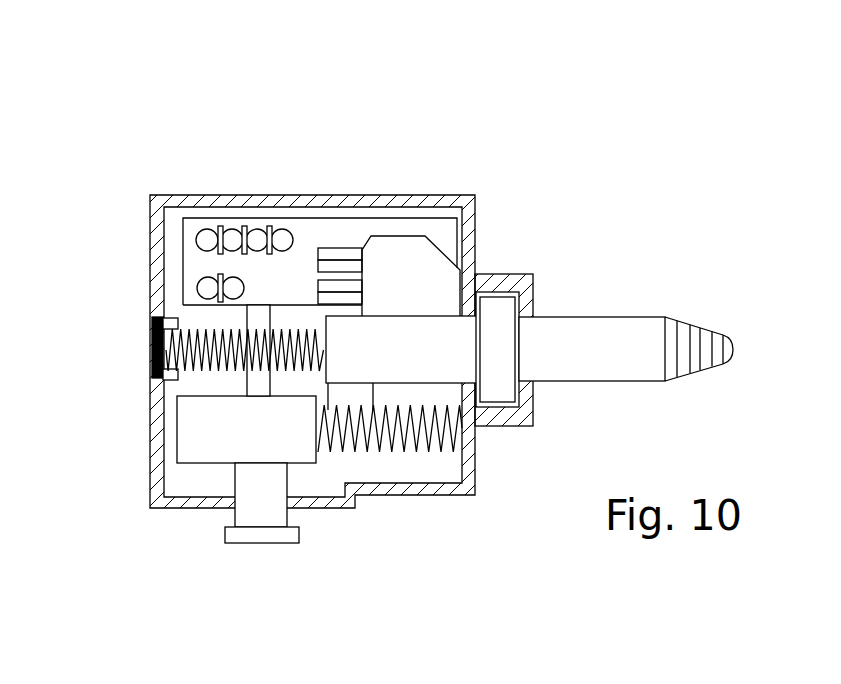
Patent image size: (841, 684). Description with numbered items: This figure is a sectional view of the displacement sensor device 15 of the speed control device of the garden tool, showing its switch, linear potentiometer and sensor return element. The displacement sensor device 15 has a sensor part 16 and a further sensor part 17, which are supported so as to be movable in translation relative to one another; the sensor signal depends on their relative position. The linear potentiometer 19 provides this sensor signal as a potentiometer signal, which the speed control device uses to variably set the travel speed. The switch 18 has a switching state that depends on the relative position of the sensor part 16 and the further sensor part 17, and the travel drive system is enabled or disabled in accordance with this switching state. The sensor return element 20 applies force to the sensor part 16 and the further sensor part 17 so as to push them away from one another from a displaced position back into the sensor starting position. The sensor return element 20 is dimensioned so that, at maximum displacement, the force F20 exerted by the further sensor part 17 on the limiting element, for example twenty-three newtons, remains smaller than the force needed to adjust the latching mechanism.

The displacement sensor device 15 is at (120, 141).
The sensor part 16 is at (187, 497).
The further sensor part 17 is at (602, 338).
The switch 18 is at (302, 450).
The linear potentiometer 19 is at (352, 268).
The sensor return element 20 is at (153, 375).
The force F20 is at (150, 319).